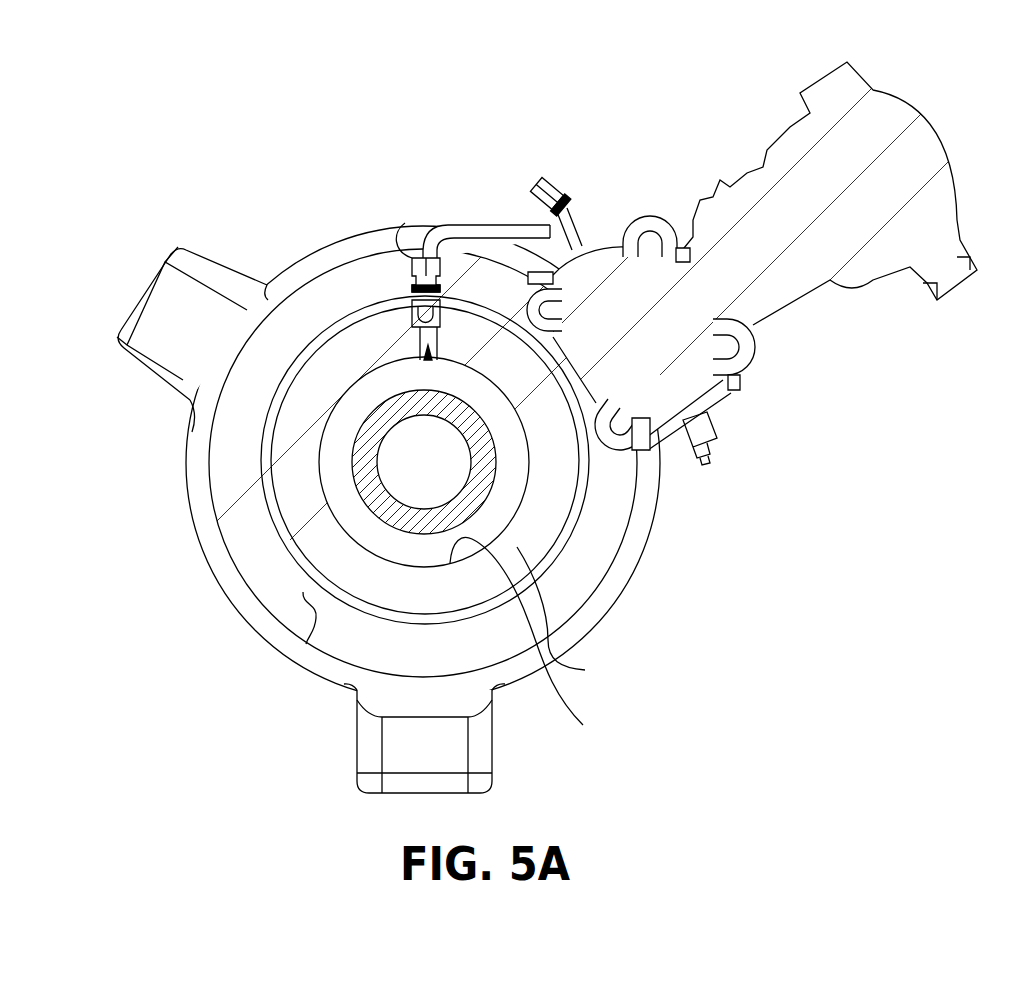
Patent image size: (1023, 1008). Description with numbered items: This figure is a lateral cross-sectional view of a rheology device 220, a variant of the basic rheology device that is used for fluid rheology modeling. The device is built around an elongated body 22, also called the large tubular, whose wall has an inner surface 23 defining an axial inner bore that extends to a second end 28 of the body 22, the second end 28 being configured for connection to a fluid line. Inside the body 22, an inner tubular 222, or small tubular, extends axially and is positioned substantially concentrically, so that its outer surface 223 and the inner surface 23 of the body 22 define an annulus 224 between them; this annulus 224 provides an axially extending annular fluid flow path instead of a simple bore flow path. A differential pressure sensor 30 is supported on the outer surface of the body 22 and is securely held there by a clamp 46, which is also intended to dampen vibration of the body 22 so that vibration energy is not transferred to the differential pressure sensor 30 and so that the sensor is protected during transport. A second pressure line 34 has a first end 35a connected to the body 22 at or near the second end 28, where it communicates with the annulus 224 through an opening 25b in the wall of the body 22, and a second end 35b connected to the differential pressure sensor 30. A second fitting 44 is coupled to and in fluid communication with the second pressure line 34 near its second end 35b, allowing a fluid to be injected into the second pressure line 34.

The rheology device 220 is at (226, 187).
The second end 28 is at (327, 280).
The second pressure line 34 is at (462, 222).
The first end 35a is at (418, 246).
The second fitting 44 is at (540, 178).
The second end 35b is at (580, 218).
The differential pressure sensor 30 is at (865, 225).
The clamp 46 is at (580, 515).
The elongated body 22 is at (570, 618).
The inner surface 23 is at (535, 641).
The inner tubular 222 is at (363, 468).
The outer surface 223 is at (393, 527).
The annulus 224 is at (363, 520).
The opening 25b is at (420, 360).